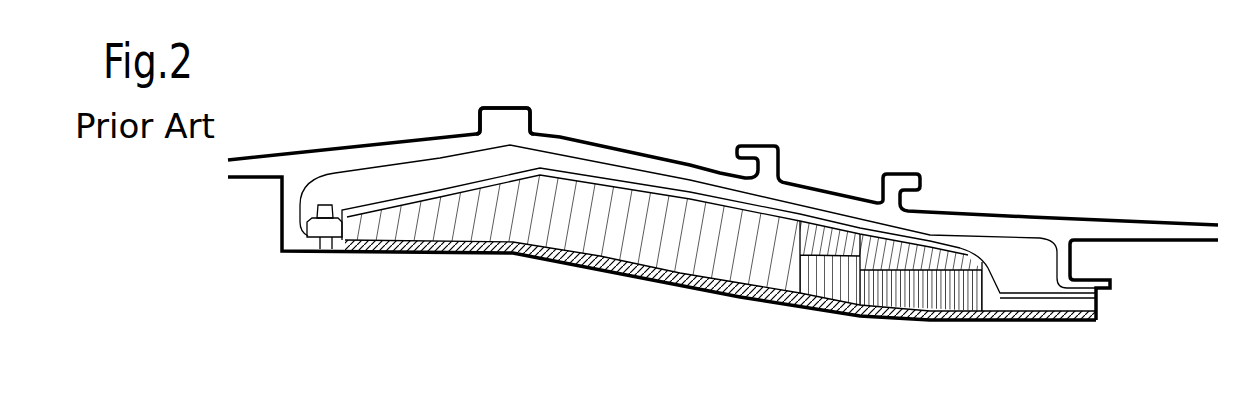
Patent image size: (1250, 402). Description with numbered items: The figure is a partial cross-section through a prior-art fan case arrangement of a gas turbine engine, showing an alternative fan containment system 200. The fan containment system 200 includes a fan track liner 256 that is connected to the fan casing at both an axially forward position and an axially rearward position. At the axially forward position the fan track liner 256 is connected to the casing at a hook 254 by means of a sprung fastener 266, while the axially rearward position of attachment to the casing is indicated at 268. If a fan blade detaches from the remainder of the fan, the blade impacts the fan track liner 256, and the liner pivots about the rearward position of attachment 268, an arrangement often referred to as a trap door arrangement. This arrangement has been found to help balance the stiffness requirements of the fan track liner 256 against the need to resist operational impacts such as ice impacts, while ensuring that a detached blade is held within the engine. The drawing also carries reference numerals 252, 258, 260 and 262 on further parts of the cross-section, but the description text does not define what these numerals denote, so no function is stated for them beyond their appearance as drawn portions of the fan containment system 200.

The fan containment system 200 is at (1078, 155).
The outer skin / inlet lip wall 252 is at (376, 150).
The hook 254 is at (299, 242).
The fan track liner 256 is at (364, 188).
The backing sheet 258 is at (428, 247).
The honeycomb core 260 is at (587, 200).
The hat stiffener / face sheet 262 is at (500, 237).
The sprung fastener 266 is at (326, 252).
The rearward position of attachment 268 is at (1112, 279).